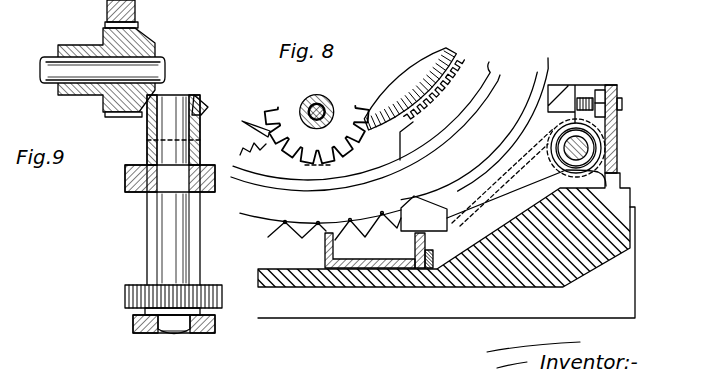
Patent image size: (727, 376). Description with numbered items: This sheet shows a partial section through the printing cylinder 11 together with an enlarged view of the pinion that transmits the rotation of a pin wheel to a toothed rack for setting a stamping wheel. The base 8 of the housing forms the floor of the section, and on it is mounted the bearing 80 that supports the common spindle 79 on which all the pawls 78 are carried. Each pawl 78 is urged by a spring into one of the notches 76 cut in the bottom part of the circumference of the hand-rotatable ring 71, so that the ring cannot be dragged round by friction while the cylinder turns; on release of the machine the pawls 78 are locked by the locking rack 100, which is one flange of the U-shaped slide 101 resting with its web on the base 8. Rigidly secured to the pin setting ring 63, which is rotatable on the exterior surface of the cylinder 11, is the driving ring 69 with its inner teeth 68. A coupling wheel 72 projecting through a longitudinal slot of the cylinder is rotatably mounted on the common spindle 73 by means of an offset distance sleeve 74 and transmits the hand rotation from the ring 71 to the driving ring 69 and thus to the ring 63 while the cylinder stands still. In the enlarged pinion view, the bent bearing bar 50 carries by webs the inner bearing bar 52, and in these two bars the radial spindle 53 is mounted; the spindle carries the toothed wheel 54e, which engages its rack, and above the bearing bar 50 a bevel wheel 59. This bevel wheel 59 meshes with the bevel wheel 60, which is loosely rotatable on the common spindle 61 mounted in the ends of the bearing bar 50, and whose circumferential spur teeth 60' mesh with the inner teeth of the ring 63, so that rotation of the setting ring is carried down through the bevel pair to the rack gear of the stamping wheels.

In FIG. 8, the base 8 is at (360, 276).
In FIG. 8, the printing cylinder 11 is at (441, 57).
In FIG. 9, the bearing bar 50 is at (216, 178).
In FIG. 9, the inner bearing bar 52 is at (216, 322).
In FIG. 9, the radial spindle 53 is at (168, 329).
In FIG. 9, the toothed wheel 54e is at (212, 289).
In FIG. 9, the bevel wheel 59 is at (201, 124).
In FIG. 9, the bevel wheel 60 is at (122, 63).
In FIG. 9, the spur teeth 60' is at (123, 125).
In FIG. 9, the common spindle 61 is at (155, 71).
In FIG. 9, the ring 63 is at (110, 15).
In FIG. 8, the ring 63 is at (414, 119).
In FIG. 8, the inner teeth 68 is at (255, 143).
In FIG. 8, the driving ring 69 is at (388, 148).
In FIG. 8, the ring 71 is at (549, 66).
In FIG. 8, the coupling wheel 72 is at (362, 116).
In FIG. 8, the common spindle 73 is at (321, 98).
In FIG. 8, the offset distance sleeve 74 is at (311, 102).
In FIG. 8, the notches 76 is at (312, 236).
In FIG. 8, the pawl 78 is at (499, 204).
In FIG. 8, the common spindle 79 is at (588, 148).
In FIG. 8, the bearing 80 is at (613, 85).
In FIG. 8, the locking rack 100 is at (415, 249).
In FIG. 8, the U-shaped slide 101 is at (333, 249).